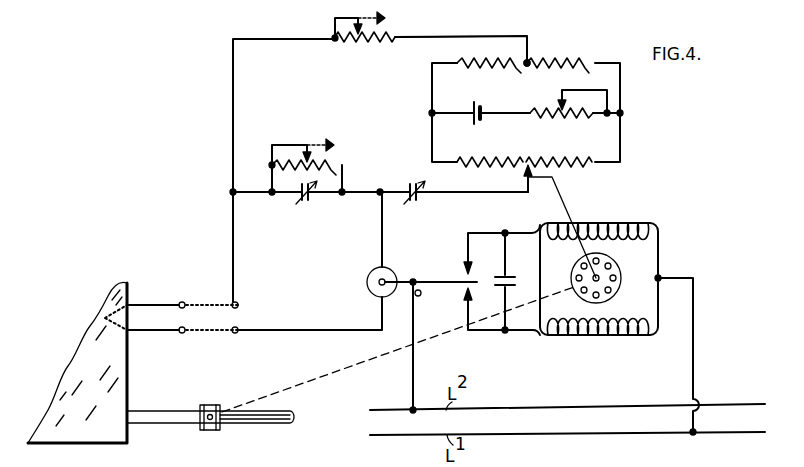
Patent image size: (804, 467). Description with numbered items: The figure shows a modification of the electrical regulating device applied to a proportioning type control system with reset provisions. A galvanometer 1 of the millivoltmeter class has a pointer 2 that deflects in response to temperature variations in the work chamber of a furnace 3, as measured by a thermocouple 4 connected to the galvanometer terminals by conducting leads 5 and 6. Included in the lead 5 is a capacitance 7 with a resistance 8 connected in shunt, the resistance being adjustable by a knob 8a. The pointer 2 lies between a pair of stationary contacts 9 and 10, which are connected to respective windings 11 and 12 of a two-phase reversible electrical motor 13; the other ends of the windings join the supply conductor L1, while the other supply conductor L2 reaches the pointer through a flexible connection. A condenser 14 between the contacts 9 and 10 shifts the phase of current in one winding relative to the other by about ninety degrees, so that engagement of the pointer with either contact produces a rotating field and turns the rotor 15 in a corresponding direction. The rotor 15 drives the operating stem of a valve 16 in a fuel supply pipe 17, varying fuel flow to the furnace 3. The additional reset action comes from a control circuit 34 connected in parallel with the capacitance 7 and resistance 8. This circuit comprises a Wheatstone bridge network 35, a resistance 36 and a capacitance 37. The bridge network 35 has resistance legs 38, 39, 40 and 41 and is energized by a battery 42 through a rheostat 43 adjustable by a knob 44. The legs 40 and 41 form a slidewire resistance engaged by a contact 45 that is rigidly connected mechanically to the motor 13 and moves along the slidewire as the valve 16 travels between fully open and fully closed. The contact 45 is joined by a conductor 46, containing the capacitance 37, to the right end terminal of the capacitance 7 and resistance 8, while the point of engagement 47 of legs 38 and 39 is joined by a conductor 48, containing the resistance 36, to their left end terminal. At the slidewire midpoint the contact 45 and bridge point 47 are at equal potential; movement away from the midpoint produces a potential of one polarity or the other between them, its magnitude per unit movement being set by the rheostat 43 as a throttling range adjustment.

The galvanometer 1 is at (389, 267).
The pointer 2 is at (430, 281).
The furnace 3 is at (125, 402).
The thermocouple 4 is at (105, 318).
The conducting lead 5 is at (152, 304).
The conducting lead 6 is at (165, 331).
The capacitance 7 is at (308, 206).
The resistance 8 is at (271, 169).
The knob 8a is at (336, 148).
The stationary contact 9 is at (472, 266).
The stationary contact 10 is at (472, 298).
The winding 11 is at (607, 222).
The winding 12 is at (600, 336).
The two-phase reversible electrical motor 13 is at (590, 271).
The condenser 14 is at (510, 282).
The rotor 15 is at (620, 276).
The valve 16 is at (206, 405).
The fuel supply pipe 17 is at (258, 425).
The control circuit 34 is at (372, 84).
The Wheatstone bridge network 35 is at (504, 99).
The resistance 36 is at (370, 44).
The capacitance 37 is at (415, 205).
The resistance leg 38 is at (510, 63).
The resistance leg 39 is at (588, 62).
The resistance leg 40 is at (468, 158).
The resistance leg 41 is at (572, 160).
The battery 42 is at (474, 102).
The rheostat 43 is at (557, 113).
The knob 44 is at (546, 97).
The contact 45 is at (522, 173).
The conductor 46 is at (472, 192).
The point of engagement 47 is at (531, 61).
The conductor 48 is at (458, 36).